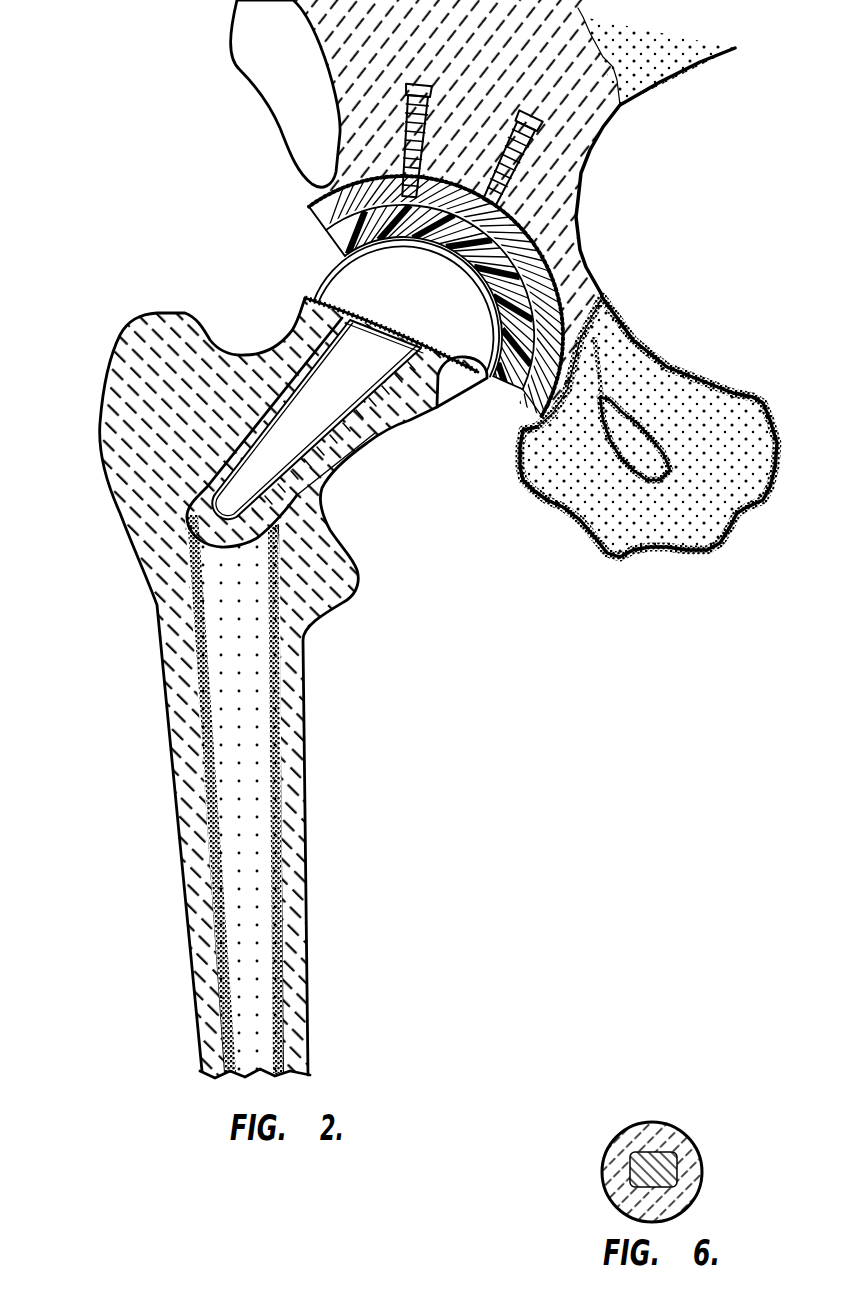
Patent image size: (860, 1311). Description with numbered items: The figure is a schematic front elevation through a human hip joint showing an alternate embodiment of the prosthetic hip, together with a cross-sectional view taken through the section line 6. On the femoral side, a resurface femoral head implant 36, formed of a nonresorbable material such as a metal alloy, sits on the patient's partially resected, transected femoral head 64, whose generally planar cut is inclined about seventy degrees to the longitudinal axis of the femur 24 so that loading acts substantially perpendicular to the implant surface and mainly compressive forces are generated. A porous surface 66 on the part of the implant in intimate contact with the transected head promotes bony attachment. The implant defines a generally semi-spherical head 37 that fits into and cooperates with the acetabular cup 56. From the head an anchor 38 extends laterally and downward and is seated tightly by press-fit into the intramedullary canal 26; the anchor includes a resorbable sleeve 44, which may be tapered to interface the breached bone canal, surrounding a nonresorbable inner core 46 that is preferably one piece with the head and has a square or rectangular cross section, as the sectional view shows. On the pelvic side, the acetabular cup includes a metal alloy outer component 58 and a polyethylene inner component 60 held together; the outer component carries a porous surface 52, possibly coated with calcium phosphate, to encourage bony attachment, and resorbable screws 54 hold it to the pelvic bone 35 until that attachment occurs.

In FIG. 2, the section line of FIG. 6 is at (267, 325).
In FIG. 2, the femur 24 is at (304, 1047).
In FIG. 2, the intramedullary canal 26 is at (263, 1068).
In FIG. 2, the pelvic bone 35 is at (578, 113).
In FIG. 2, the resurface femoral head implant 36 is at (313, 291).
In FIG. 2, the semi-spherical head 37 is at (360, 280).
In FIG. 2, the anchor 38 is at (192, 494).
In FIG. 6, the anchor 38 is at (703, 1130).
In FIG. 2, the resorbable sleeve 44 is at (290, 362).
In FIG. 2, the nonresorbable inner core 46 is at (296, 440).
In FIG. 6, the nonresorbable inner core 46 is at (677, 1165).
In FIG. 2, the porous surface 52 is at (520, 205).
In FIG. 2, the resorbable screws 54 is at (407, 106).
In FIG. 2, the acetabular cup 56 is at (302, 307).
In FIG. 2, the outer component 58 is at (333, 199).
In FIG. 2, the inner component 60 is at (328, 225).
In FIG. 2, the transected femoral head 64 is at (418, 395).
In FIG. 2, the porous surface 66 is at (437, 398).